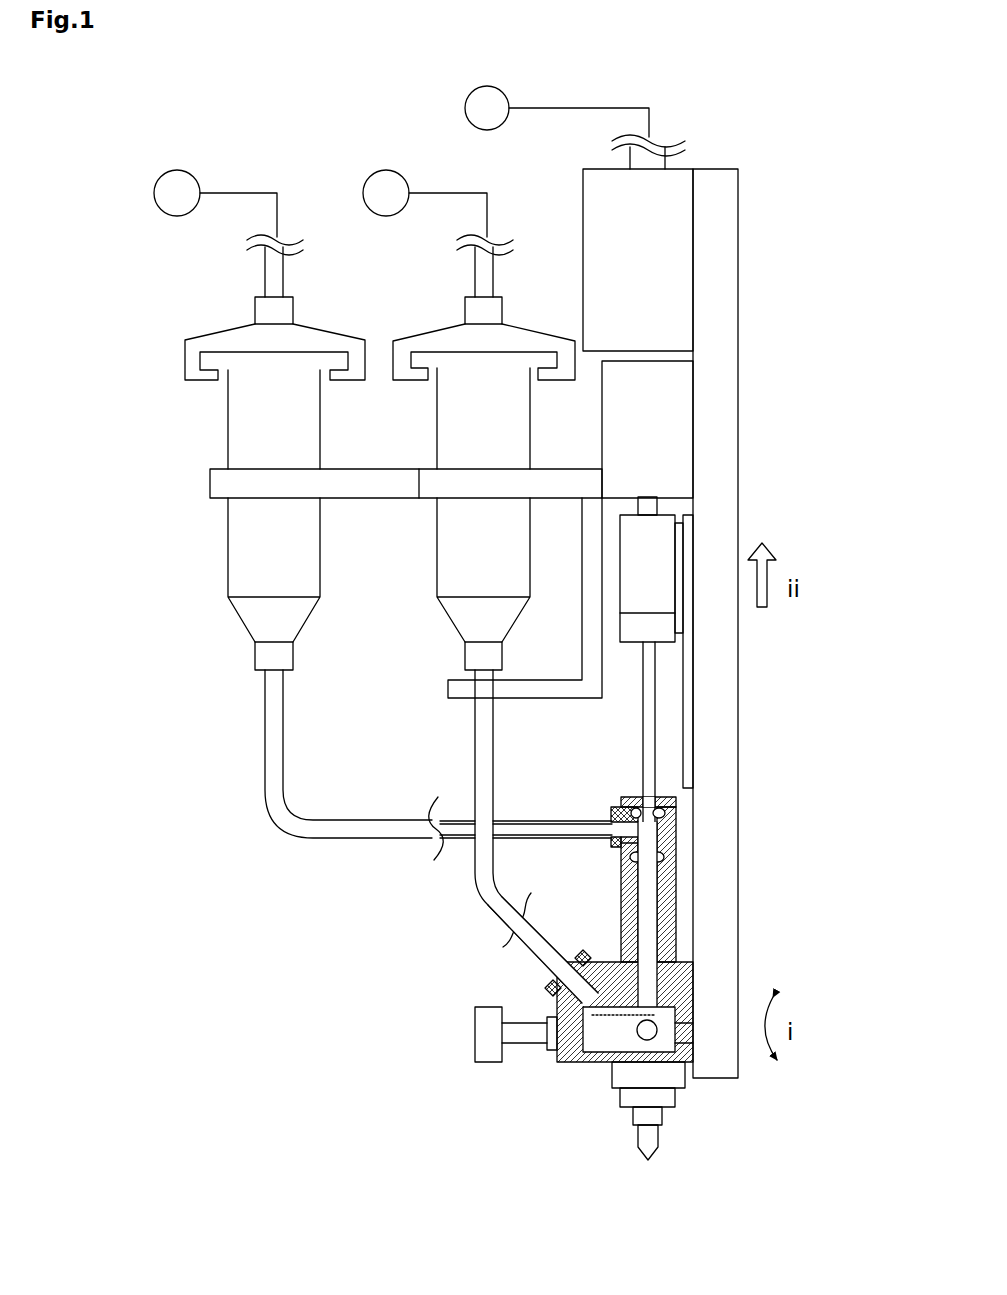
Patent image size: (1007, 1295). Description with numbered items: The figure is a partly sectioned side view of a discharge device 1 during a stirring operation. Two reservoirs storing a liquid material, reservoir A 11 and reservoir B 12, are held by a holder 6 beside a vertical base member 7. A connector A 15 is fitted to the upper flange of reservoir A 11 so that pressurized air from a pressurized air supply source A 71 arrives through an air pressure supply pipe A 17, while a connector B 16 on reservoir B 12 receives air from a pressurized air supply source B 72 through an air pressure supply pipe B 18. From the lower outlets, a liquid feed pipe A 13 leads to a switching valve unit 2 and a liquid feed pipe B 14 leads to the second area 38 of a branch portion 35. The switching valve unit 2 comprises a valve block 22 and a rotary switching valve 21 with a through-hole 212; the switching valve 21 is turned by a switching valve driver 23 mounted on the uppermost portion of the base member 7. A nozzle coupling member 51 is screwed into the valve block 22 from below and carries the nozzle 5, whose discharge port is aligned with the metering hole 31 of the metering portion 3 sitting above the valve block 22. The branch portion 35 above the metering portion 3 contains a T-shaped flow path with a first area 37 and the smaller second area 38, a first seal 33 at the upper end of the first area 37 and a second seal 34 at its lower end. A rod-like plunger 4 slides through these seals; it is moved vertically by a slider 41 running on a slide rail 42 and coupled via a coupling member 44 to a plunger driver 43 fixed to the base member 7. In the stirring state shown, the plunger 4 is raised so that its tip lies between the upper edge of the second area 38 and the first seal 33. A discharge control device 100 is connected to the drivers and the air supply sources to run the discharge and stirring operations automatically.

The discharge device 1 is at (405, 985).
The switching valve unit 2 is at (470, 1078).
The metering portion 3 is at (685, 859).
The plunger 4 is at (645, 770).
The nozzle 5 is at (650, 1135).
The holder 6 is at (230, 482).
The base member 7 is at (722, 303).
The reservoir A 11 is at (443, 548).
The reservoir B 12 is at (233, 548).
The liquid feed pipe A 13 is at (497, 907).
The liquid feed pipe B 14 is at (410, 825).
The connector A 15 is at (457, 342).
The connector B 16 is at (230, 343).
The air pressure supply pipe A 17 is at (482, 253).
The air pressure supply pipe B 18 is at (273, 253).
The switching valve 21 is at (602, 1043).
The valve block 22 is at (673, 988).
The switching valve driver 23 is at (677, 200).
The metering hole 31 is at (647, 938).
The first seal 33 is at (675, 808).
The second seal 34 is at (672, 857).
The branch portion 35 is at (675, 828).
The first area 37 is at (615, 862).
The second area 38 is at (610, 810).
The slider 41 is at (657, 575).
The slide rail 42 is at (687, 695).
The plunger driver 43 is at (677, 432).
The coupling member 44 is at (643, 507).
The nozzle coupling member 51 is at (683, 1083).
The pressurized air supply source A 71 is at (375, 190).
The pressurized air supply source B 72 is at (165, 190).
The discharge control device 100 is at (467, 123).
The through-hole 212 is at (647, 1033).